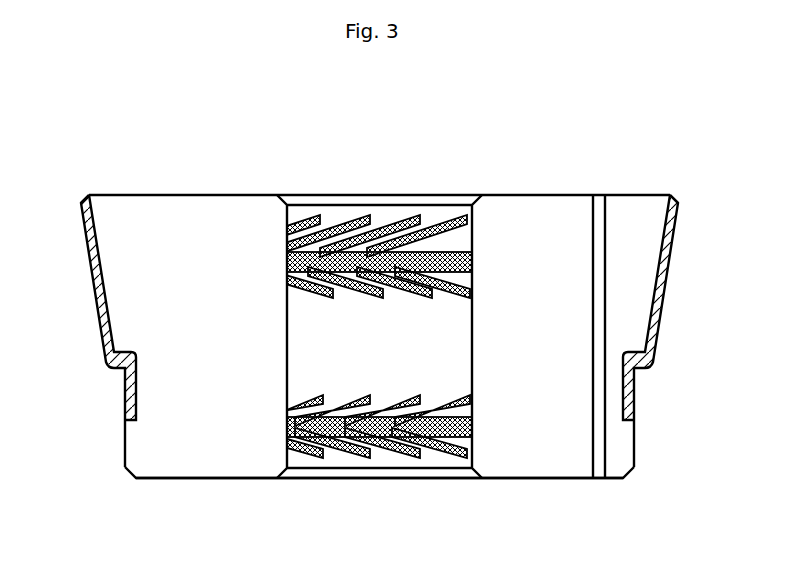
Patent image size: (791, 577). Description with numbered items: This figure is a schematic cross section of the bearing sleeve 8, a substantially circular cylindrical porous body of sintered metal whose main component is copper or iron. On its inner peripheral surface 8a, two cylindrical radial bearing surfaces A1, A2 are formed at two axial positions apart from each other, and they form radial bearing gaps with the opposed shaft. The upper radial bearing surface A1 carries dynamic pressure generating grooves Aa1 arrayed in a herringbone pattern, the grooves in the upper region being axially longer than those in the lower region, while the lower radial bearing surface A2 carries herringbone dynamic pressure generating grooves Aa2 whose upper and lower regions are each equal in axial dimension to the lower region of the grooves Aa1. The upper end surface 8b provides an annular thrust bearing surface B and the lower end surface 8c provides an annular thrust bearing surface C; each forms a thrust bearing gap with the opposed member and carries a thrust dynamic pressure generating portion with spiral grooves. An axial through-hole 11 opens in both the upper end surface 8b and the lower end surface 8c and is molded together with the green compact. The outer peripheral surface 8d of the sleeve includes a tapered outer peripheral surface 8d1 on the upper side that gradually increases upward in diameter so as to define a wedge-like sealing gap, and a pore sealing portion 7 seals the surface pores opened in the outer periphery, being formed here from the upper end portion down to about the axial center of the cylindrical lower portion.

The bearing sleeve 8 is at (697, 195).
The pore sealing portion 7 is at (663, 292).
The axial through-hole 11 is at (600, 247).
The inner peripheral surface 8a is at (472, 335).
The upper end surface 8b is at (562, 195).
The lower end surface 8c is at (540, 480).
The flange 8d is at (125, 428).
The tapered outer peripheral surface 8d1 is at (100, 330).
The upper radial bearing surface A1 is at (287, 268).
The dynamic pressure generating grooves Aa1 is at (357, 228).
The lower radial bearing surface A2 is at (290, 432).
The dynamic pressure generating grooves Aa2 is at (372, 403).
The thrust bearing surface B is at (517, 195).
The thrust bearing surface C is at (222, 480).